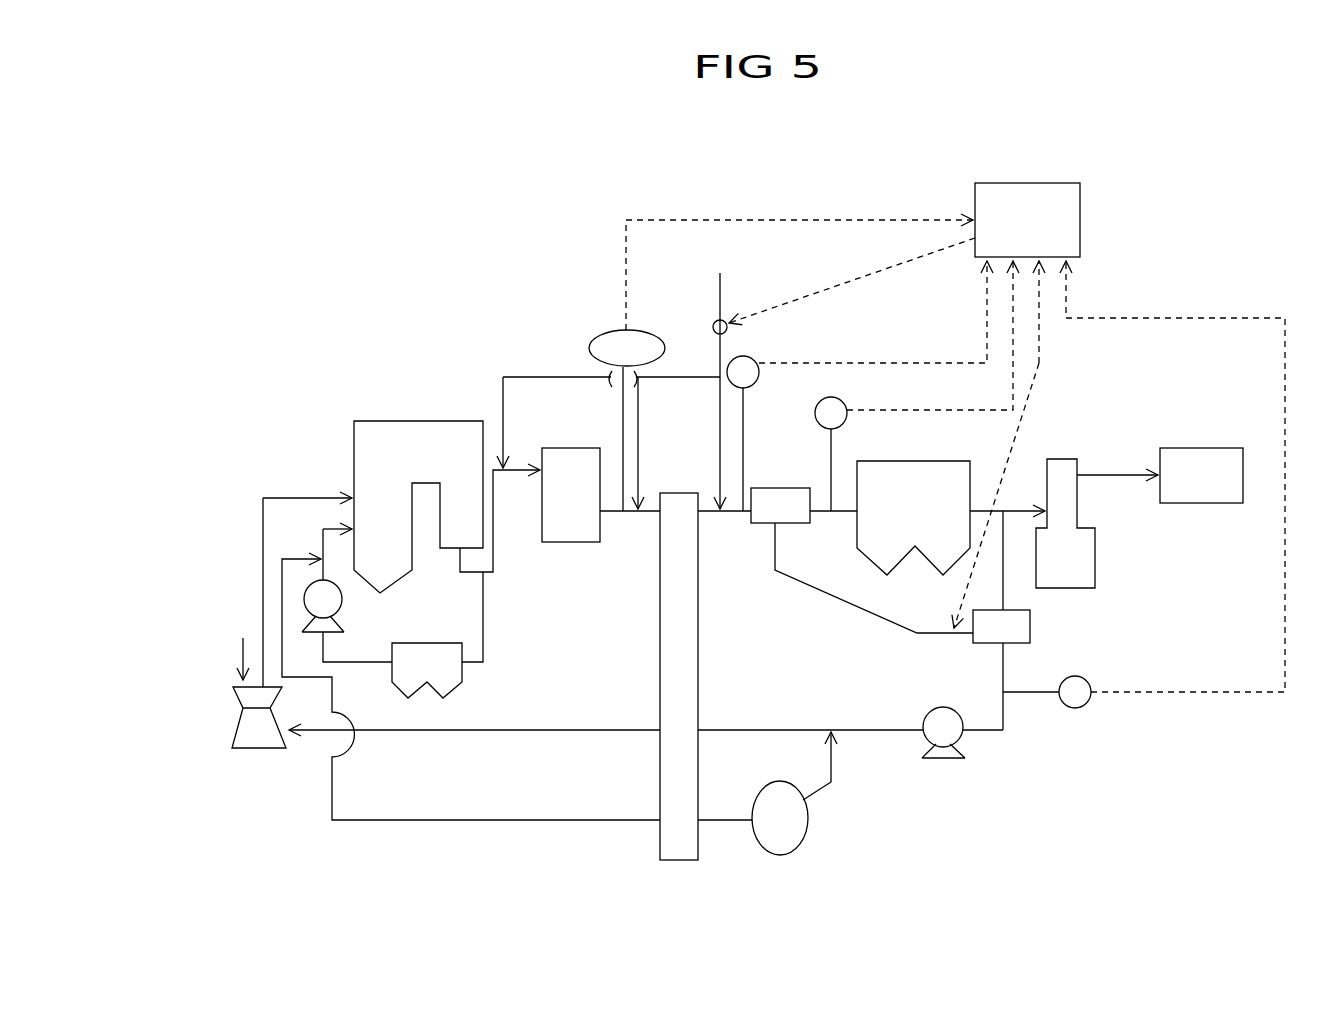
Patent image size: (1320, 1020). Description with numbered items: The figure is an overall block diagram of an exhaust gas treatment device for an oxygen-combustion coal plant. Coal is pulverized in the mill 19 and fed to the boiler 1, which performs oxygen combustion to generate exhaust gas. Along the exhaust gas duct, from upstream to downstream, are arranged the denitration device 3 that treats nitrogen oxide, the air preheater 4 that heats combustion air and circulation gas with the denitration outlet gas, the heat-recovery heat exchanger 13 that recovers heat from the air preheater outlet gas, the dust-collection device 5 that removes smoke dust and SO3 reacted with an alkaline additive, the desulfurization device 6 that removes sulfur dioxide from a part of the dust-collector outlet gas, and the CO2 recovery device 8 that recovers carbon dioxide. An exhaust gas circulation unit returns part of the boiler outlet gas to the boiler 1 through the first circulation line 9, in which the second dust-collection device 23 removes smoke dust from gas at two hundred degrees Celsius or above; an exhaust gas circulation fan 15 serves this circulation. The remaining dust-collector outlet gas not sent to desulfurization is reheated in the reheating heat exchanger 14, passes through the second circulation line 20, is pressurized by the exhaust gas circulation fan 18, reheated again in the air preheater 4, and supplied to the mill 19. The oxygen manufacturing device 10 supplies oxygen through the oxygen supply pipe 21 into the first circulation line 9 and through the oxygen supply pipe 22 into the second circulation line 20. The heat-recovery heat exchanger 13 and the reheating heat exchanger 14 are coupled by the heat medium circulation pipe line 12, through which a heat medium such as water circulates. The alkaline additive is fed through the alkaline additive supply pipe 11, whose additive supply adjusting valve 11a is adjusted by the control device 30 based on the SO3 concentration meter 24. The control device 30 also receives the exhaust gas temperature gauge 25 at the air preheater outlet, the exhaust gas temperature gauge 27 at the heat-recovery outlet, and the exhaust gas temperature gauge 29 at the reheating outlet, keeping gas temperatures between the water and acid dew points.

The boiler 1 is at (439, 421).
The denitration device 3 is at (590, 448).
The air preheater 4 is at (670, 493).
The dust-collection device 5 is at (955, 461).
The desulfurization device 6 is at (1053, 459).
The CO2 recovery device 8 is at (1190, 448).
The first circulation line 9 is at (483, 622).
The oxygen manufacturing device 10 is at (797, 835).
The alkaline additive supply pipe 11 is at (722, 291).
The additive supply adjusting valve 11a is at (712, 326).
The heat medium circulation pipe line 12 is at (780, 577).
The heat-recovery heat exchanger 13 is at (762, 488).
The reheating heat exchanger 14 is at (1030, 625).
The exhaust gas circulation fan 15 is at (342, 592).
The exhaust gas circulation fan 18 is at (965, 732).
The mill 19 is at (257, 748).
The second circulation line 20 is at (883, 728).
The oxygen supply pipe 21 is at (543, 818).
The oxygen supply pipe 22 is at (817, 792).
The second dust-collection device 23 is at (455, 688).
The SO3 concentration meter 24 is at (588, 355).
The exhaust gas temperature gauge 25 is at (750, 357).
The exhaust gas temperature gauge 27 is at (842, 401).
The exhaust gas temperature gauge 29 is at (1085, 706).
The control device 30 is at (1015, 183).